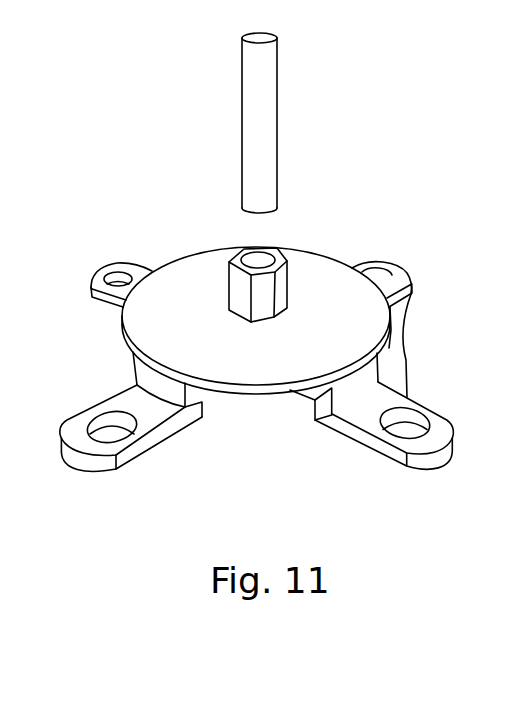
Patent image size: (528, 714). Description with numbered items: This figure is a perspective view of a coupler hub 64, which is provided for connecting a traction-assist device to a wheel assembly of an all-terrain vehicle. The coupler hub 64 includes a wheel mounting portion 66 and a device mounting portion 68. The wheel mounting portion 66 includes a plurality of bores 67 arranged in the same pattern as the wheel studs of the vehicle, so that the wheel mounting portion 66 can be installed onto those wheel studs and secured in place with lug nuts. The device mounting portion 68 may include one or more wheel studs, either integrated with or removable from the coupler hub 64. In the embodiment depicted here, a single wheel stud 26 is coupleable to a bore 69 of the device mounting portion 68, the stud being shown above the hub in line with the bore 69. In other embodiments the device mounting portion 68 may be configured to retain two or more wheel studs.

The wheel stud 26 is at (277, 52).
The coupler hub 64 is at (280, 293).
The wheel mounting portion 66 is at (399, 312).
The bores 67 is at (124, 288).
The device mounting portion 68 is at (188, 219).
The bore 69 is at (247, 257).